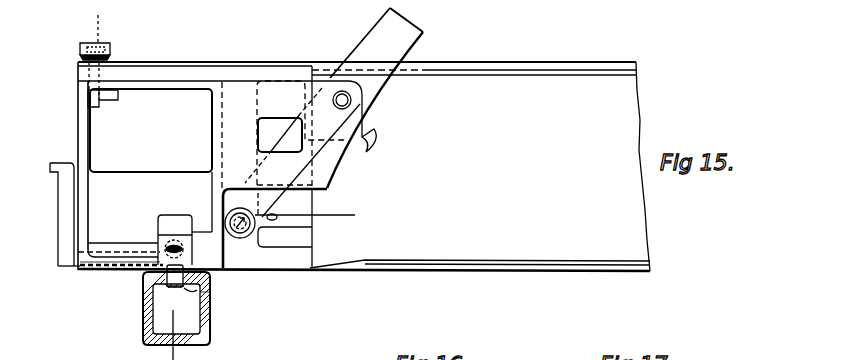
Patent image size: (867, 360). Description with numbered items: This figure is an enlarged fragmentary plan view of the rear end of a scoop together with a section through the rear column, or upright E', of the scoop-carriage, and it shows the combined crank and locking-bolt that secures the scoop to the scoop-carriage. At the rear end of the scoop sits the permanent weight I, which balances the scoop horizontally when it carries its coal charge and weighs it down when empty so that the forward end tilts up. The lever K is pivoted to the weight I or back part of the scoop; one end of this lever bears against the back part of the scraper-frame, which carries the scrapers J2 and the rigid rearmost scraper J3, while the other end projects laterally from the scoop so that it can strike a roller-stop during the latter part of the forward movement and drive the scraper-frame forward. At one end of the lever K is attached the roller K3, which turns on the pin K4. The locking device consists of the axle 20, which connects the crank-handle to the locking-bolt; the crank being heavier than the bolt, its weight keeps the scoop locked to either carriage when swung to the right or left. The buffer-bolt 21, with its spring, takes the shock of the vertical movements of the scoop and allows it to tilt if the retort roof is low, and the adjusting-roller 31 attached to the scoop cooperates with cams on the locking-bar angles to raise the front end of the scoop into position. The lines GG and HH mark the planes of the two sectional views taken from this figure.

The adjusting-rollers 31 is at (87, 43).
The rearmost scraper J3 is at (52, 214).
The axle 20 is at (107, 263).
The section line H H HH is at (174, 235).
The buffer-bolt 21 is at (160, 250).
The upright of the carriage E' is at (173, 315).
The scrapers J2 is at (211, 292).
The section line G G GG is at (289, 228).
The permanent weight I is at (312, 250).
The roller K3 is at (238, 238).
The pin K4 is at (226, 233).
The lever K is at (334, 112).
The pivot k is at (336, 106).